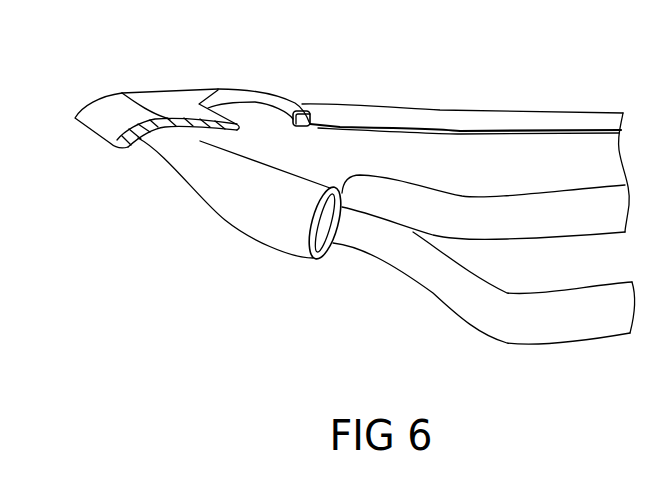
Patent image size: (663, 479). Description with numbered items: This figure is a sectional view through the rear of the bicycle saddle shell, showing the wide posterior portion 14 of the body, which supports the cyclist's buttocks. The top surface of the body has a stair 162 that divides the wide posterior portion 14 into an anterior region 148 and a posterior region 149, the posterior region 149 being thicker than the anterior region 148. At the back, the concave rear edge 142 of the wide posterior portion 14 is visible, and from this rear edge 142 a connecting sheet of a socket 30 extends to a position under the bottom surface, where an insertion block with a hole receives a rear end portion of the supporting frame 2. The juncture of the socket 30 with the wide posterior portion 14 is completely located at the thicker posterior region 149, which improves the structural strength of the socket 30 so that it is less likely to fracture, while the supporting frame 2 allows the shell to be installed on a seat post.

The supporting frame 2 is at (592, 361).
The wide posterior portion 14 is at (593, 81).
The socket 30 is at (223, 220).
The rear edge 142 is at (89, 135).
The anterior region 148 is at (498, 122).
The posterior region 149 is at (180, 97).
The stair 162 is at (309, 118).